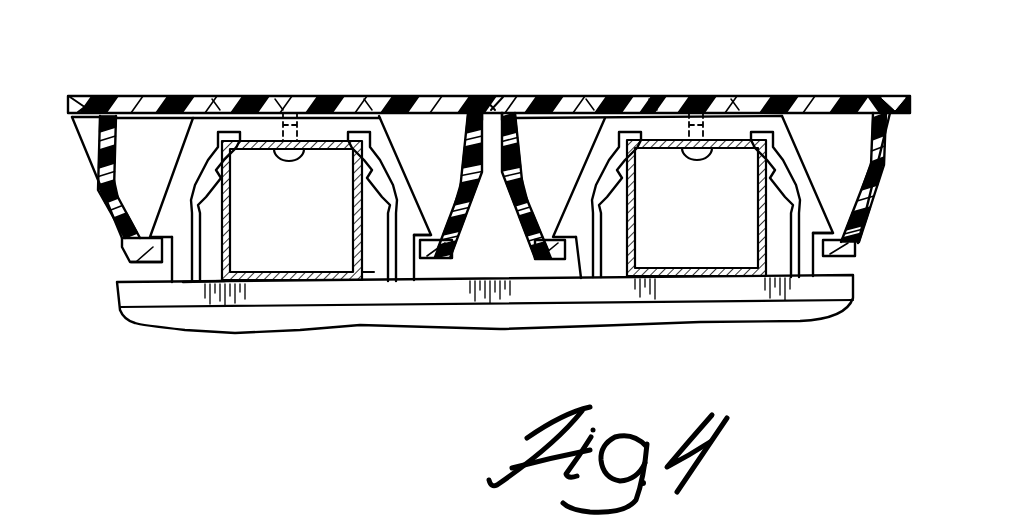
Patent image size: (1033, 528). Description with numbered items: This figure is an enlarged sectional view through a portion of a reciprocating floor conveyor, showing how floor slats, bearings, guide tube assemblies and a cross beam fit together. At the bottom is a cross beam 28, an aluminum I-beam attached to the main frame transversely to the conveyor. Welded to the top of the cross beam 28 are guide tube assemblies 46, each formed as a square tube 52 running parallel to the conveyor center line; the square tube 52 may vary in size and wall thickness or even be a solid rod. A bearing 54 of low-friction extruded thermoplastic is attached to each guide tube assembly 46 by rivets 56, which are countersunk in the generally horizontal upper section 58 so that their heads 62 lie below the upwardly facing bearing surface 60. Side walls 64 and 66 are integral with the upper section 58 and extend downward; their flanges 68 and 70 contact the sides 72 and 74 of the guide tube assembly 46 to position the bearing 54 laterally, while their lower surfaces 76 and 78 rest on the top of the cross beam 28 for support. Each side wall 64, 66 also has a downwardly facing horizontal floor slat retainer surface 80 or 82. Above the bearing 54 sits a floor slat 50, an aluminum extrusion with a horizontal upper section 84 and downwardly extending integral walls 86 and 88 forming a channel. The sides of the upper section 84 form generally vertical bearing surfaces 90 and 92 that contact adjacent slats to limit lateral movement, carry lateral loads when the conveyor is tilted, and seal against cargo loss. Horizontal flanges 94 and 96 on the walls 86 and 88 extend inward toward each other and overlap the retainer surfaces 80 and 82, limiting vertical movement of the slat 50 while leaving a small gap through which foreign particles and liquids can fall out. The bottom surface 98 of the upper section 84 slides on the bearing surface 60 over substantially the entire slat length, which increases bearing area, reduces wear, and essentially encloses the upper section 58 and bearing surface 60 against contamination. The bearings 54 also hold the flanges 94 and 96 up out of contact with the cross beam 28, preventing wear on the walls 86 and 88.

The cross beam 28 is at (232, 329).
The guide tube assembly 46 is at (302, 292).
The floor slat 50 is at (146, 96).
The square tube 52 is at (353, 227).
The bearing 54 is at (406, 273).
The rivet 56 is at (286, 158).
The generally horizontal upper section 58 is at (368, 96).
The upwardly facing bearing surface 60 is at (279, 96).
The rivet head 62 is at (693, 96).
The side wall 64 is at (181, 152).
The side wall 66 is at (392, 145).
The flange 68 is at (202, 187).
The flange 70 is at (369, 184).
The side of guide tube assembly 72 is at (222, 281).
The side of guide tube assembly 74 is at (372, 276).
The lower surface 76 is at (183, 284).
The lower surface 78 is at (398, 282).
The floor slat retainer surface 80 is at (125, 240).
The floor slat retainer surface 82 is at (840, 252).
The horizontal upper section 84 is at (217, 96).
The side wall 86 is at (96, 180).
The side wall 88 is at (456, 210).
The vertical bearing surface 90 is at (480, 96).
The vertical bearing surface 92 is at (84, 95).
The horizontal flange 94 is at (109, 271).
The horizontal flange 96 is at (430, 258).
The bottom surface 98 is at (590, 97).